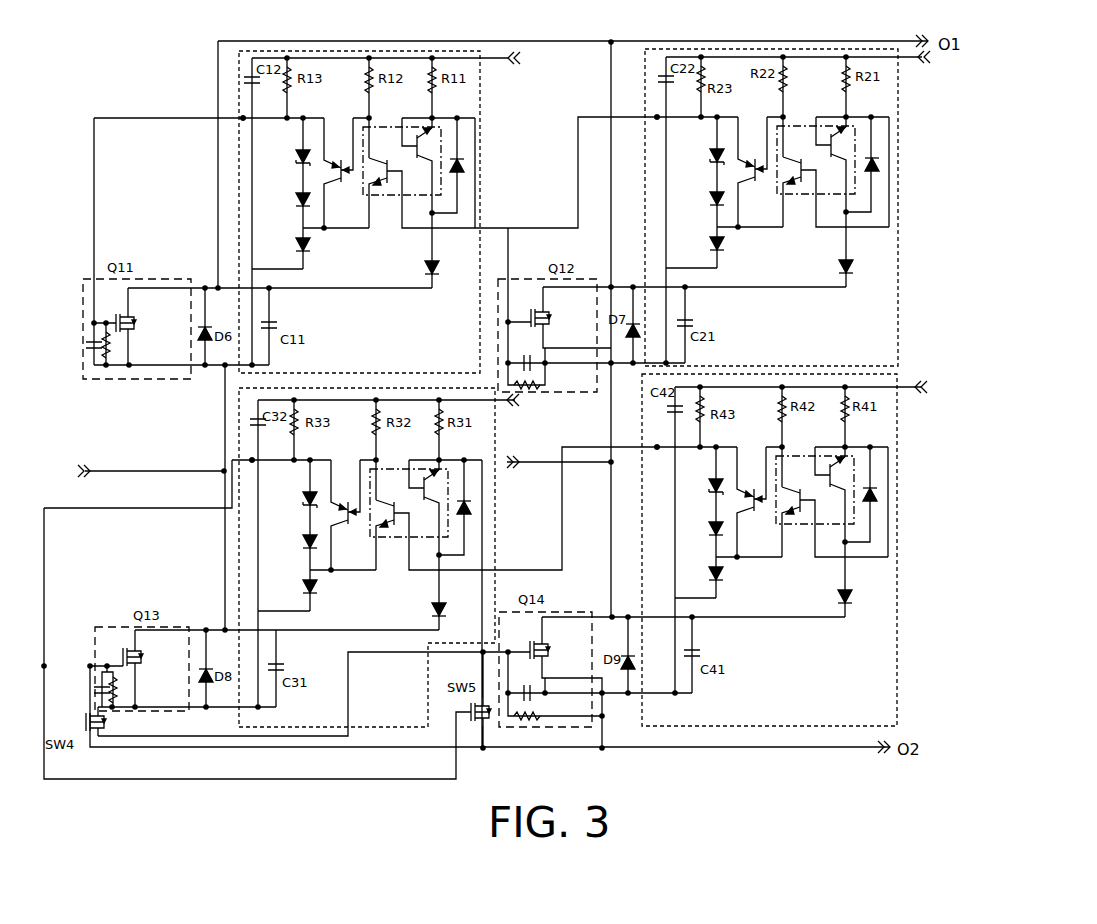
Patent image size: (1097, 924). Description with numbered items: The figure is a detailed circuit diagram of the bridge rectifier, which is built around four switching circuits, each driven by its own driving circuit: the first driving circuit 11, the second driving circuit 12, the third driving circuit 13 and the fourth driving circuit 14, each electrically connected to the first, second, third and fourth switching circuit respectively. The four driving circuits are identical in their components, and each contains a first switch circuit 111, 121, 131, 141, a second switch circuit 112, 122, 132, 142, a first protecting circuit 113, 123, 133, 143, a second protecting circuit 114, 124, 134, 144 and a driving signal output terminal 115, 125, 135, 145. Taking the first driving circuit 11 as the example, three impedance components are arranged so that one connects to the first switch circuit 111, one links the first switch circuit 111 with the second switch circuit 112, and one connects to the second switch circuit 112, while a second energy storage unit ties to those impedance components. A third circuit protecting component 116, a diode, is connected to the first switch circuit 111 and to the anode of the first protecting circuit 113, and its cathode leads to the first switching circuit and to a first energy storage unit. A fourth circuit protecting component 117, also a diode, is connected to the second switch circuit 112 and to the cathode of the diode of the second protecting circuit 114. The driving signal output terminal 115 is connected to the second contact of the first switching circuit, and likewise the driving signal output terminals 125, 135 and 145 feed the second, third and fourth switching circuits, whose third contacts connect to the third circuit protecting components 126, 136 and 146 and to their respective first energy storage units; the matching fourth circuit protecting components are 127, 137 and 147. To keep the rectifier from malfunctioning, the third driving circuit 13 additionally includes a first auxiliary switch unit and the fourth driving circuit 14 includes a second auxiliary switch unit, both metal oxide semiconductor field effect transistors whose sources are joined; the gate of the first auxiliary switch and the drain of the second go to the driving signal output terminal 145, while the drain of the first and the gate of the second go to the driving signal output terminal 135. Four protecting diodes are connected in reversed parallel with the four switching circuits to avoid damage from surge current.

The first driving circuit 11 is at (482, 157).
The first switch circuit 111 is at (383, 127).
The second switch circuit 112 is at (333, 197).
The first protecting circuit 113 is at (460, 172).
The second protecting circuit 114 is at (280, 184).
The driving signal output terminal 115 is at (240, 115).
The third circuit protecting component 116 is at (440, 275).
The fourth circuit protecting component 117 is at (308, 260).
The second driving circuit 12 is at (898, 172).
The first switch circuit 121 is at (806, 127).
The second switch circuit 122 is at (750, 200).
The first protecting circuit 123 is at (878, 178).
The second protecting circuit 124 is at (700, 184).
The driving signal output terminal 125 is at (655, 114).
The third circuit protecting component 126 is at (857, 275).
The fourth circuit protecting component 127 is at (726, 260).
The third driving circuit 13 is at (495, 438).
The first switch circuit 131 is at (388, 470).
The second switch circuit 132 is at (338, 535).
The first protecting circuit 133 is at (468, 512).
The second protecting circuit 134 is at (290, 530).
The driving signal output terminal 135 is at (250, 458).
The third circuit protecting component 136 is at (425, 618).
The fourth circuit protecting component 137 is at (312, 600).
The fourth driving circuit 14 is at (897, 470).
The first switch circuit 141 is at (806, 456).
The second switch circuit 142 is at (750, 527).
The first protecting circuit 143 is at (877, 503).
The second protecting circuit 144 is at (705, 512).
The driving signal output terminal 145 is at (655, 445).
The third circuit protecting component 146 is at (857, 603).
The fourth circuit protecting component 147 is at (726, 585).